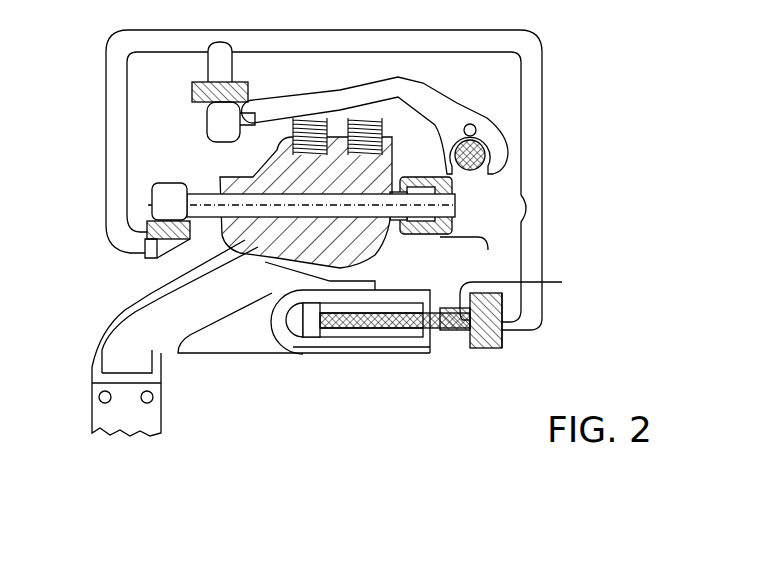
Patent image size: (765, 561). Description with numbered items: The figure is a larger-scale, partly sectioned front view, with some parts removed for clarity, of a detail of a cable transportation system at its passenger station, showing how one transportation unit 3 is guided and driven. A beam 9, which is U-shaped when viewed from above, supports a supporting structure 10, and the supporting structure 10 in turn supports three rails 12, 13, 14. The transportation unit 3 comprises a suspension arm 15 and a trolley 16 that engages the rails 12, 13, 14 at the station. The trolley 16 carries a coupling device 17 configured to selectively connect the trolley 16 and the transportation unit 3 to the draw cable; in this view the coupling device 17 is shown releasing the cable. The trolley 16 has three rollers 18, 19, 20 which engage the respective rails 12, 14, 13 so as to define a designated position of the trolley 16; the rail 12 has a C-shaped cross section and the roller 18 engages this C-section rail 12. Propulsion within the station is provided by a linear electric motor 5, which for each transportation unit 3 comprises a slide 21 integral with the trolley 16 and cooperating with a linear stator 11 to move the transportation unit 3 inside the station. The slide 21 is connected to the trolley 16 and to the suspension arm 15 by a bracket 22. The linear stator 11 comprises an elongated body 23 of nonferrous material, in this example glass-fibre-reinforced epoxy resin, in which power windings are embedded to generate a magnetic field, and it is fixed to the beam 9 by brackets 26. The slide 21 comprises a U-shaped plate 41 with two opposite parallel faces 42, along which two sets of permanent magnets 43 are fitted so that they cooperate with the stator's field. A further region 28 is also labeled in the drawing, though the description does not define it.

The transportation unit 3 is at (180, 455).
The linear electric motor 5 is at (494, 357).
The beam 9 is at (503, 338).
The supporting structure 10 is at (535, 236).
The linear stator 11 is at (300, 318).
The rail 12 is at (383, 263).
The rail 13 is at (250, 92).
The rail 14 is at (147, 236).
The suspension arm 15 is at (117, 368).
The trolley 16 is at (197, 160).
The coupling device 17 is at (426, 142).
The roller 18 is at (423, 217).
The roller 19 is at (150, 200).
The roller 20 is at (206, 126).
The slide 21 is at (393, 356).
The bracket 22 is at (220, 340).
The elongated body 23 is at (434, 306).
The bracket 26 is at (524, 297).
The gap 28 is at (467, 340).
The U-shaped plate 41 is at (292, 344).
The parallel face 42 is at (298, 292).
The permanent magnets 43 is at (388, 302).